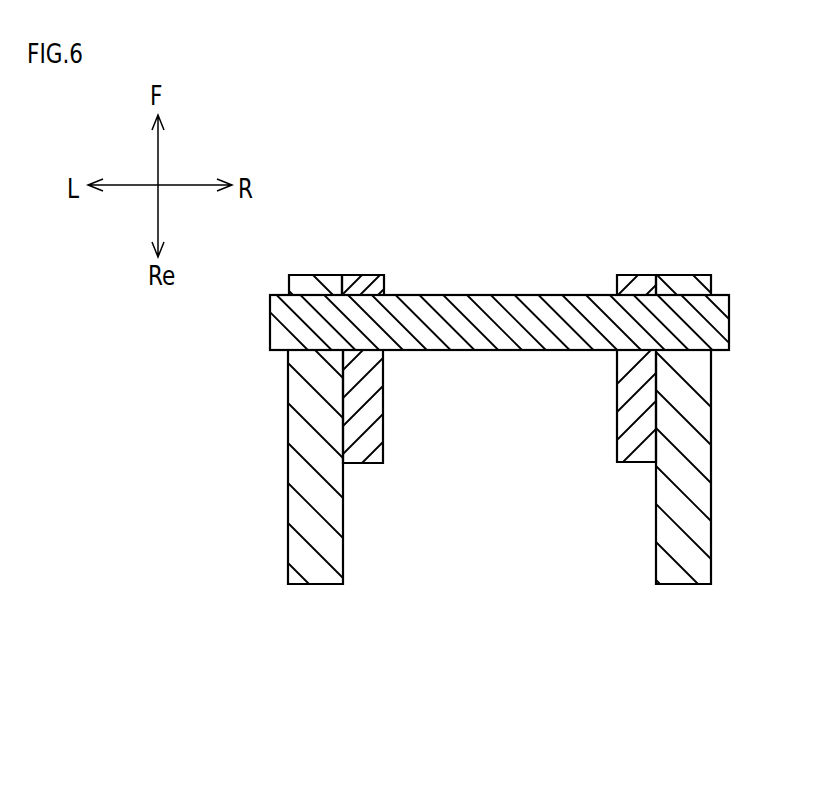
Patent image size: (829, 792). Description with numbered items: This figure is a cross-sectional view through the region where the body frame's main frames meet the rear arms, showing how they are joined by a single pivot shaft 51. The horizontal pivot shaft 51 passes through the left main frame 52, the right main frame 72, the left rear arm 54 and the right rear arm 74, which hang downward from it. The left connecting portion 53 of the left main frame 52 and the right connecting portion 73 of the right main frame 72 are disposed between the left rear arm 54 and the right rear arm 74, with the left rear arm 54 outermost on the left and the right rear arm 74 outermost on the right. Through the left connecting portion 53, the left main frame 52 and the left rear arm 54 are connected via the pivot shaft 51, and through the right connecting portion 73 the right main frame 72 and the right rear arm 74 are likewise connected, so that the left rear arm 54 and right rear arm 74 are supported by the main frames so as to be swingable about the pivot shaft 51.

The pivot shaft 51 is at (480, 295).
The left main frame 52 is at (360, 462).
The left connecting portion 53 is at (373, 275).
The left rear arm 54 is at (323, 578).
The right main frame 72 is at (638, 460).
The right connecting portion 73 is at (684, 275).
The right rear arm 74 is at (677, 586).